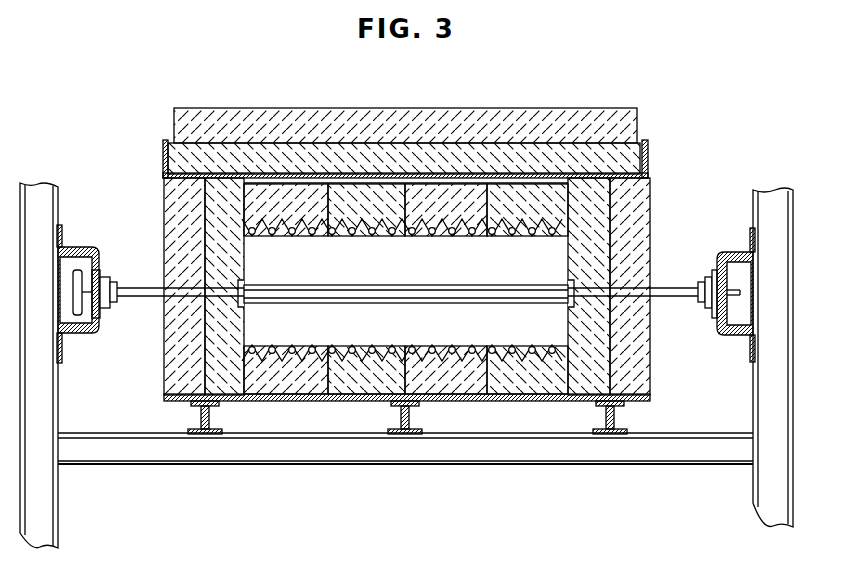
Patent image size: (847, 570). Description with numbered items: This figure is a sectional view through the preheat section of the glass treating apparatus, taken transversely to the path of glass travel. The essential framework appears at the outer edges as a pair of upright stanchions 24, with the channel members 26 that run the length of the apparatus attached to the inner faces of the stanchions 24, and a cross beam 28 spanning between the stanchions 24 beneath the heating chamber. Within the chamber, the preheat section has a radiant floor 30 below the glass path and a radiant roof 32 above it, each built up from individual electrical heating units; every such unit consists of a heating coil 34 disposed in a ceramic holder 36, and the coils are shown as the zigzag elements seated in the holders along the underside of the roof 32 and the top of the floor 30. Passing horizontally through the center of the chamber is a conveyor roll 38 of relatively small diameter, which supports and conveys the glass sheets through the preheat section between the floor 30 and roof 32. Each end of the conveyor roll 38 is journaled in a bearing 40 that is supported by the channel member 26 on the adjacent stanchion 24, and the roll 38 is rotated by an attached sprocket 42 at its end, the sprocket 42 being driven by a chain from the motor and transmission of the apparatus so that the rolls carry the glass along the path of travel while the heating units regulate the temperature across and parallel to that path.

The stanchion 24 is at (58, 501).
The channel member 26 is at (96, 262).
The cross beam 28 is at (153, 461).
The radiant floor 30 is at (320, 335).
The radiant roof 32 is at (520, 246).
The heating coil 34 is at (397, 346).
The ceramic holder 36 is at (450, 346).
The conveyor roll 38 is at (496, 299).
The bearing 40 is at (113, 306).
The sprocket 42 is at (80, 313).